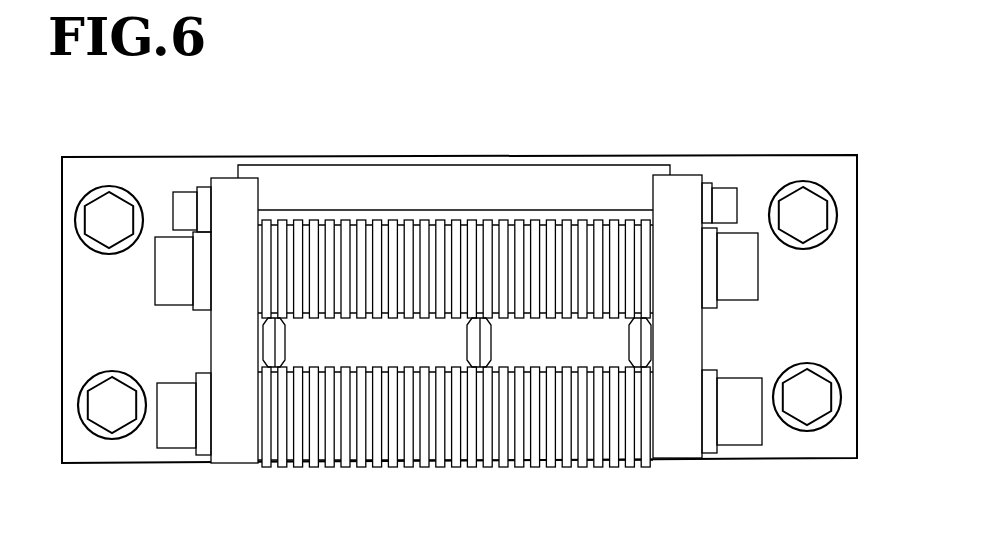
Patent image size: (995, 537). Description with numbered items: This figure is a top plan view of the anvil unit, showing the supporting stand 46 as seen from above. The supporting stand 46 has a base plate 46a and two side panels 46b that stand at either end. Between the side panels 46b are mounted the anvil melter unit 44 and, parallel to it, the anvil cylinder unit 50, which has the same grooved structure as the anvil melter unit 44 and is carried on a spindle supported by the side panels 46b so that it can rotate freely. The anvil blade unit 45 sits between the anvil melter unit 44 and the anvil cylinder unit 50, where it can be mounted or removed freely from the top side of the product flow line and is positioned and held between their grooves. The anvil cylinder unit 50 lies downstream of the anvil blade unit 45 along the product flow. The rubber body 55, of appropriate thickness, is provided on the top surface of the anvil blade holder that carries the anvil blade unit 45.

The anvil melter unit 44 is at (410, 210).
The anvil blade unit 45 is at (285, 330).
The supporting stand 46 is at (459, 307).
The base plate 46a is at (810, 443).
The side panels 46b is at (246, 452).
The anvil cylinder unit 50 is at (440, 440).
The rubber body 55 is at (418, 342).